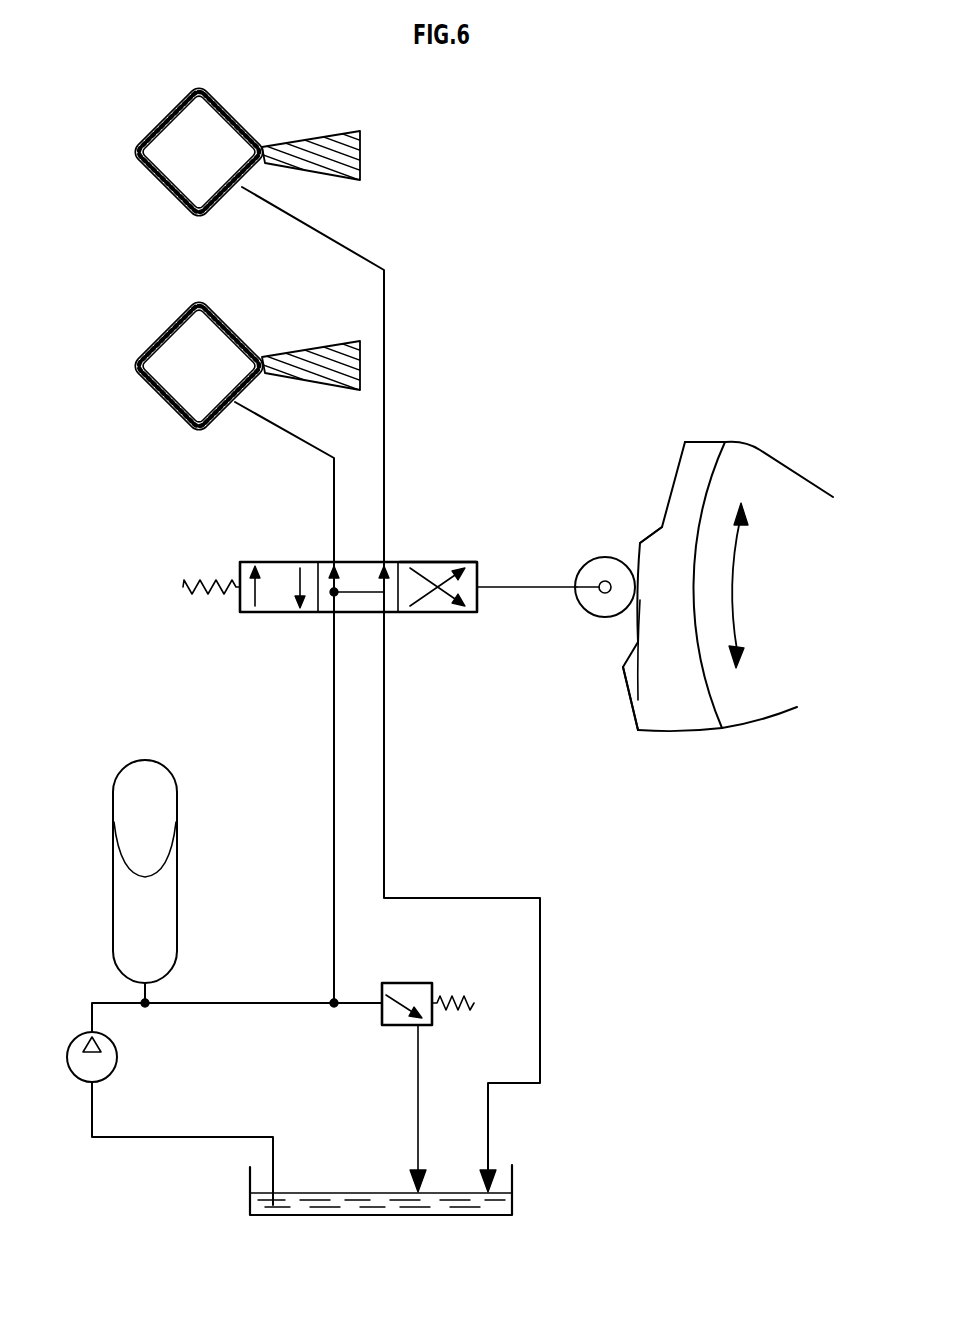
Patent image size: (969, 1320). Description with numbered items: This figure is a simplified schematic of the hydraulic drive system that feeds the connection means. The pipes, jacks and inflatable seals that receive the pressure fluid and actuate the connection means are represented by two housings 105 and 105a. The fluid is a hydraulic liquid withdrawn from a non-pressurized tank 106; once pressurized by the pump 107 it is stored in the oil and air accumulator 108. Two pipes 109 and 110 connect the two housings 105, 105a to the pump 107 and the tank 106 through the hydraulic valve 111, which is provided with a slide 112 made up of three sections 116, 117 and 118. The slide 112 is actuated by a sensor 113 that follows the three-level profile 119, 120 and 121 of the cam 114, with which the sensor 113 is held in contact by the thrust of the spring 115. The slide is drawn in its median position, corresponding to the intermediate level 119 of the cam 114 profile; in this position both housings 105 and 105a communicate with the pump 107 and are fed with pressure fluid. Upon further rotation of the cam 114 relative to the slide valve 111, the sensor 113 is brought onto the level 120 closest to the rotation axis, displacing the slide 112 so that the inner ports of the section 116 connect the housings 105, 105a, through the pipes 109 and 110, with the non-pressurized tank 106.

The housing 105 is at (155, 130).
The housing 105a is at (152, 342).
The non-pressurized tank 106 is at (500, 1193).
The pump 107 is at (75, 1077).
The oil and air accumulator 108 is at (112, 804).
The pipe 109 is at (333, 718).
The pipe 110 is at (330, 238).
The hydraulic valve 111 is at (352, 568).
The slide 112 is at (420, 562).
The sensor 113 is at (593, 572).
The cam 114 is at (688, 675).
The spring 115 is at (193, 597).
The section 116 is at (280, 603).
The section 117 is at (380, 600).
The section 118 is at (462, 600).
The intermediate level 119 is at (630, 552).
The level 120 is at (687, 590).
The level 121 is at (630, 732).